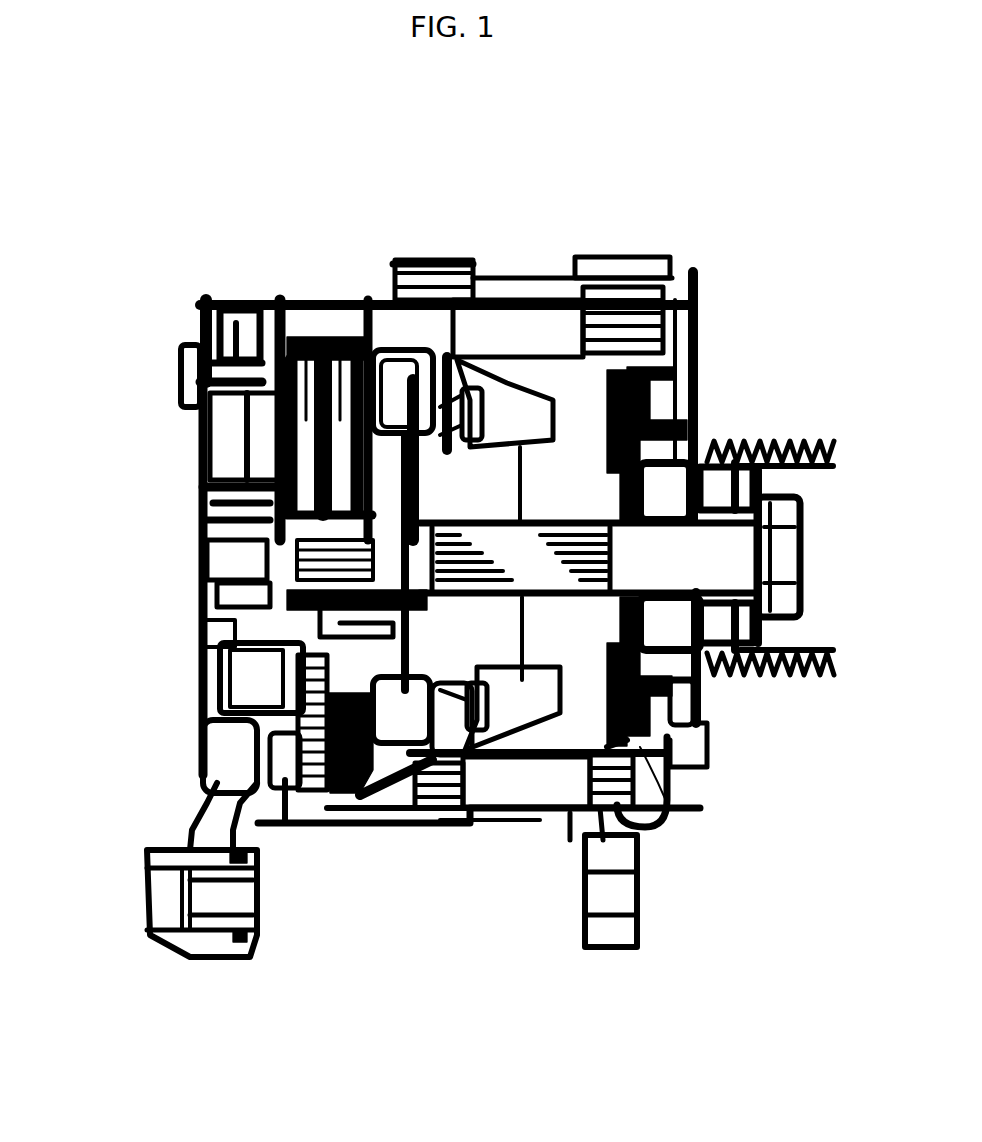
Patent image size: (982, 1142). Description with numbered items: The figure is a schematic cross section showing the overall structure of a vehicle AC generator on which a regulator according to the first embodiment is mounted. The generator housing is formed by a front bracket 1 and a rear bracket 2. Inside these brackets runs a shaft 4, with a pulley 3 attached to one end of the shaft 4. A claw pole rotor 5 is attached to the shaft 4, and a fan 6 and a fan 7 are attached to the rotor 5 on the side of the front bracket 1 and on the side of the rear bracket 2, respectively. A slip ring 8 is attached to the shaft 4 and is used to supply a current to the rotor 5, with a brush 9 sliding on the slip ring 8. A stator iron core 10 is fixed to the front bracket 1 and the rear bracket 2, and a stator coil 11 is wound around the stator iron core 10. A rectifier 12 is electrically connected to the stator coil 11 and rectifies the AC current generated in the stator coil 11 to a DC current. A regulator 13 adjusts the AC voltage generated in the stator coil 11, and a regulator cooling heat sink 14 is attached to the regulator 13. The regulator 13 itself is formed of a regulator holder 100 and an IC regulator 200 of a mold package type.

The front bracket 1 is at (630, 262).
The rear bracket 2 is at (440, 262).
The pulley 3 is at (735, 442).
The shaft 4 is at (527, 517).
The claw pole rotor 5 is at (543, 630).
The fan 6 is at (683, 807).
The fan 7 is at (393, 753).
The slip ring 8 is at (315, 632).
The brush 9 is at (205, 545).
The stator iron core 10 is at (525, 815).
The stator coil 11 is at (437, 760).
The rectifier 12 is at (275, 722).
The regulator 13 is at (180, 380).
The regulator cooling heat sink 14 is at (220, 430).
The regulator holder 100 is at (282, 345).
The IC regulator 200 is at (270, 435).